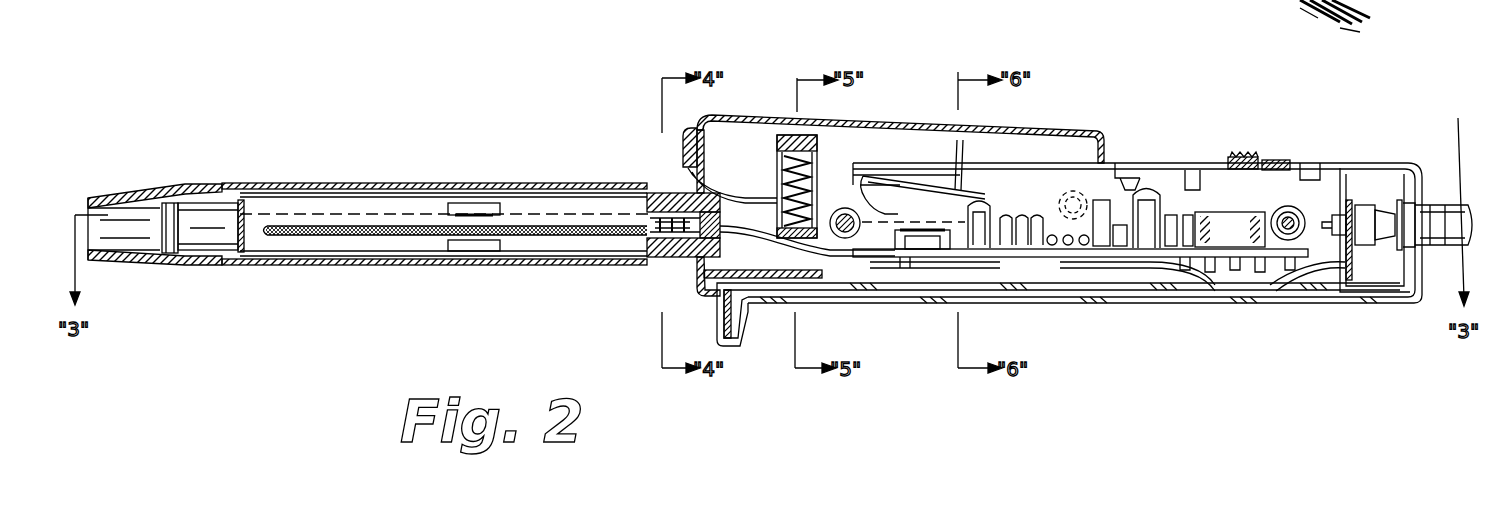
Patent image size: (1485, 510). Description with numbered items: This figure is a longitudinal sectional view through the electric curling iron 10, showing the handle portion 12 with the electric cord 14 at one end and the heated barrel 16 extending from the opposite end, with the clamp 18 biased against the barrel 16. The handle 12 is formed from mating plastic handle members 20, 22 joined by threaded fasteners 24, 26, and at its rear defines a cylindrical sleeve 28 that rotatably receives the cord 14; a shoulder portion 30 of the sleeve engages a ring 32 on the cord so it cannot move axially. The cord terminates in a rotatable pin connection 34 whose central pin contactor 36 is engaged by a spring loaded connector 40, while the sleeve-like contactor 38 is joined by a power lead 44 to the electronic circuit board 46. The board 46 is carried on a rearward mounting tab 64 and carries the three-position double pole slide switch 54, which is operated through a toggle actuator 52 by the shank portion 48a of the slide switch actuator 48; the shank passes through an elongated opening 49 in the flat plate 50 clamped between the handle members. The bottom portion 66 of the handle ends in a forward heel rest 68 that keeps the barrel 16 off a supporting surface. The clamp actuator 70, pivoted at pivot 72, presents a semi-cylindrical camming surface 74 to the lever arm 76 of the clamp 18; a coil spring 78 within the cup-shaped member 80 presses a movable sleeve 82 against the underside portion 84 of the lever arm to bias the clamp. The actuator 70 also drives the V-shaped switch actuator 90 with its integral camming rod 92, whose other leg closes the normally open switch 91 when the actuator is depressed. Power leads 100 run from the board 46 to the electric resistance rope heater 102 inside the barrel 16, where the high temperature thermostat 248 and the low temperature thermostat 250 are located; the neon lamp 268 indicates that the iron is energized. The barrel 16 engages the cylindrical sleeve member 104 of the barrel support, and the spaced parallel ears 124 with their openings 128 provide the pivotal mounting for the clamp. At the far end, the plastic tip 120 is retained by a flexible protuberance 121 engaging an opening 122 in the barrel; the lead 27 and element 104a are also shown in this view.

The electric curling iron 10 is at (1059, 170).
The handle portion 12 is at (1150, 306).
The electric cord 14 is at (1443, 167).
The heated barrel 16 is at (333, 266).
The clamp 18 is at (336, 183).
The handle member 20 is at (1348, 176).
The handle member 22 is at (1115, 15).
The threaded fastener 24 is at (1336, 212).
The threaded fastener 26 is at (908, 230).
The cord lead 27 is at (1432, 270).
The cylindrical sleeve 28 is at (1434, 210).
The shoulder portion 30 is at (1400, 205).
The ring 32 is at (1428, 206).
The rotatable pin connection 34 is at (1410, 282).
The central pin contactor 36 is at (1336, 282).
The sleeve-like contactor 38 is at (1387, 270).
The spring loaded connector 40 is at (1340, 285).
The power lead 44 is at (1216, 276).
The electronic circuit board 46 is at (1076, 262).
The slide switch actuator 48 is at (1240, 157).
The shank portion 48a is at (1273, 160).
The elongated opening 49 is at (1291, 206).
The flat plate 50 is at (1322, 165).
The toggle actuator 52 is at (1193, 184).
The three-position double pole slide switch 54 is at (1250, 238).
The rearward mounting tab 64 is at (1282, 285).
The bottom portion 66 is at (873, 305).
The forward heel rest 68 is at (742, 346).
The clamp actuator 70 is at (1059, 170).
The pivot 72 is at (1115, 167).
The semi-cylindrical camming surface 74 is at (730, 140).
The lever arm 76 is at (730, 120).
The coil spring 78 is at (832, 240).
The cup-shaped member 80 is at (699, 270).
The movable sleeve 82 is at (813, 142).
The underside portion 84 is at (767, 140).
The switch actuator 90 is at (982, 186).
The normally open switch 91 is at (885, 284).
The camming rod 92 is at (950, 132).
The power leads 100 is at (758, 262).
The electric resistance rope heater 102 is at (437, 236).
The cylindrical sleeve member 104 is at (642, 262).
The insulator 104a is at (668, 262).
The plastic tip 120 is at (150, 262).
The flexible protuberance 121 is at (208, 262).
The opening 122 is at (222, 265).
The spaced parallel ears 124 is at (608, 200).
The openings 128 is at (642, 184).
The high temperature thermostat 248 is at (464, 204).
The low temperature thermostat 250 is at (478, 252).
The neon lamp 268 is at (1175, 160).